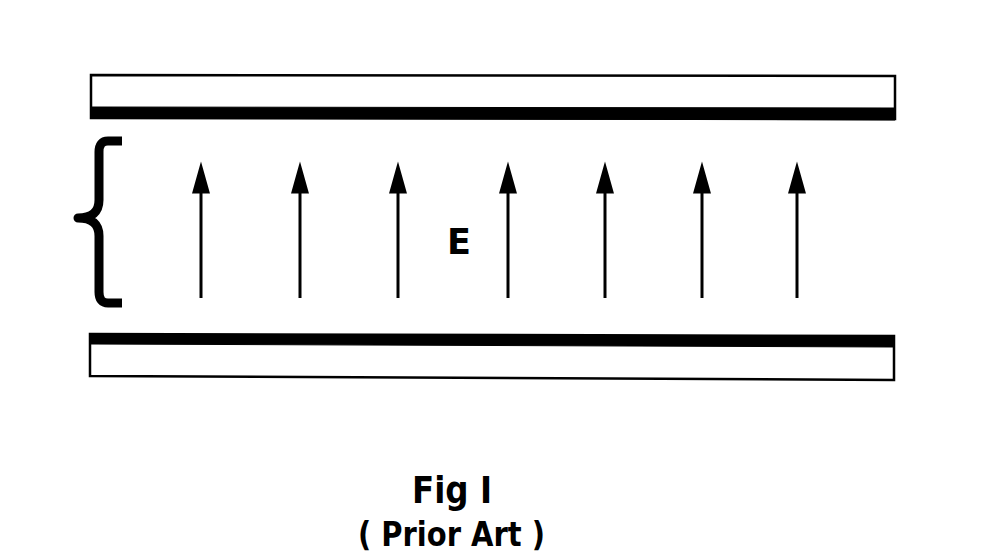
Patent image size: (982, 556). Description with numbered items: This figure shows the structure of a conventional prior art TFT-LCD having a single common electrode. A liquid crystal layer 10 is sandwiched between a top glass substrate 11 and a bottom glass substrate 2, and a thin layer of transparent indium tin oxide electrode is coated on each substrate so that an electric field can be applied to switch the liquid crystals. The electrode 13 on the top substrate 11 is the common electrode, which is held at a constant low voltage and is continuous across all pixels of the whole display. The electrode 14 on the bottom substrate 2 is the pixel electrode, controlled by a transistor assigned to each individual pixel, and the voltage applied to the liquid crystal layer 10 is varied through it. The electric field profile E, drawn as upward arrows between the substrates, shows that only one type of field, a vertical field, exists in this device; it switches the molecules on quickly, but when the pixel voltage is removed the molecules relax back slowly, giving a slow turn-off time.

The top glass substrate 11 is at (150, 90).
The common electrode 13 is at (93, 113).
The liquid crystal layer 10 is at (72, 222).
The lower substrate 2 is at (150, 358).
The pixel electrode 14 is at (615, 347).